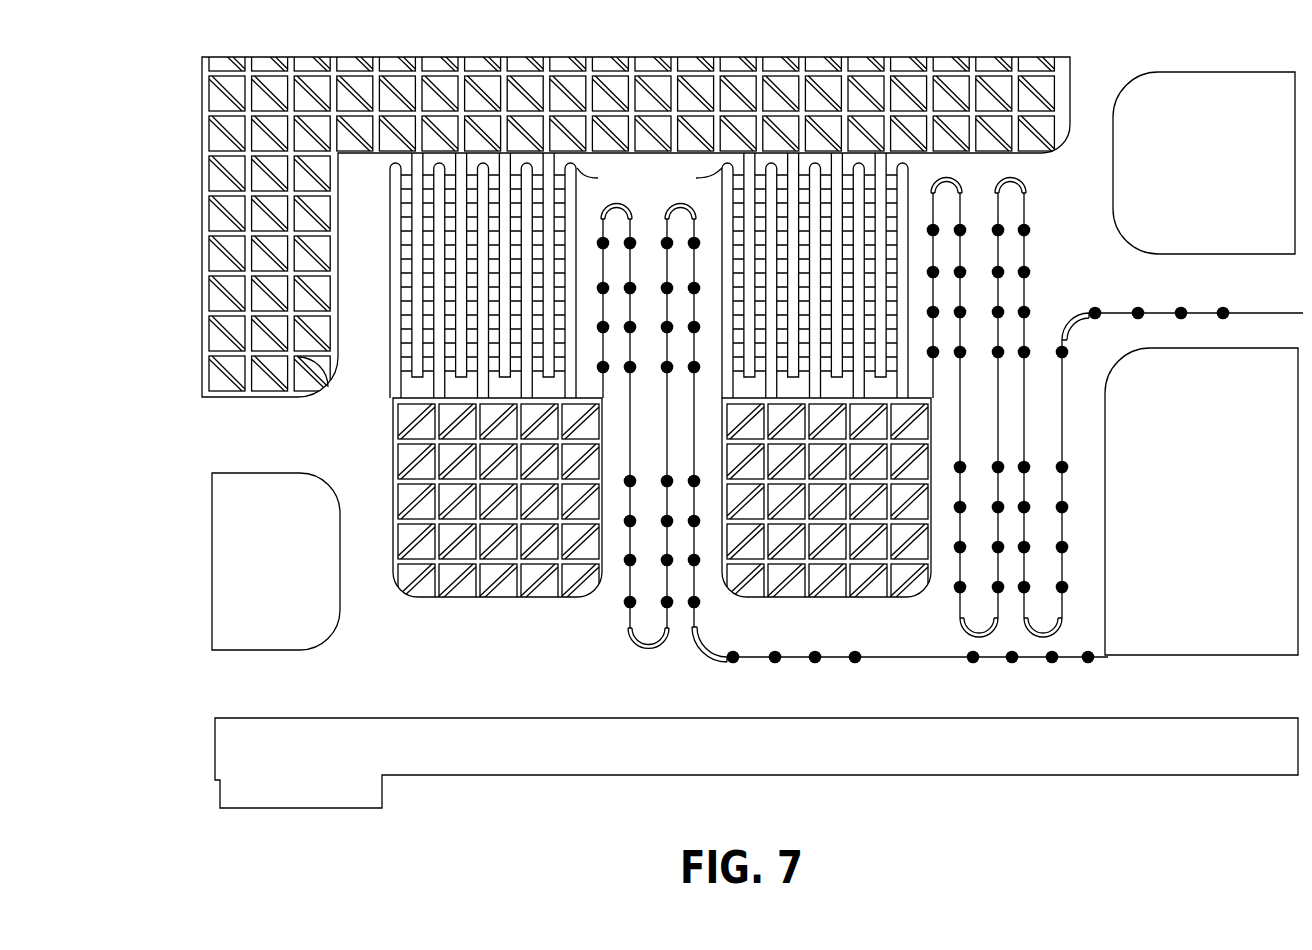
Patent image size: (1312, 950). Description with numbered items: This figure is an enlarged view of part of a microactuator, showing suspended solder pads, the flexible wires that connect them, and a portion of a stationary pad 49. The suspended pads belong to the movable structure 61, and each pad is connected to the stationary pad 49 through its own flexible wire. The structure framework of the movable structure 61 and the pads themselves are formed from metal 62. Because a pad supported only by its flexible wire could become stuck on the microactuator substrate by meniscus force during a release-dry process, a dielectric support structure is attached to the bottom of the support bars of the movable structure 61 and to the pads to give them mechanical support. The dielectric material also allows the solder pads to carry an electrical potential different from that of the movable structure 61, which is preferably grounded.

The stationary pad 49 is at (1166, 657).
The movable structure 61 is at (350, 57).
The metal 62 is at (298, 386).